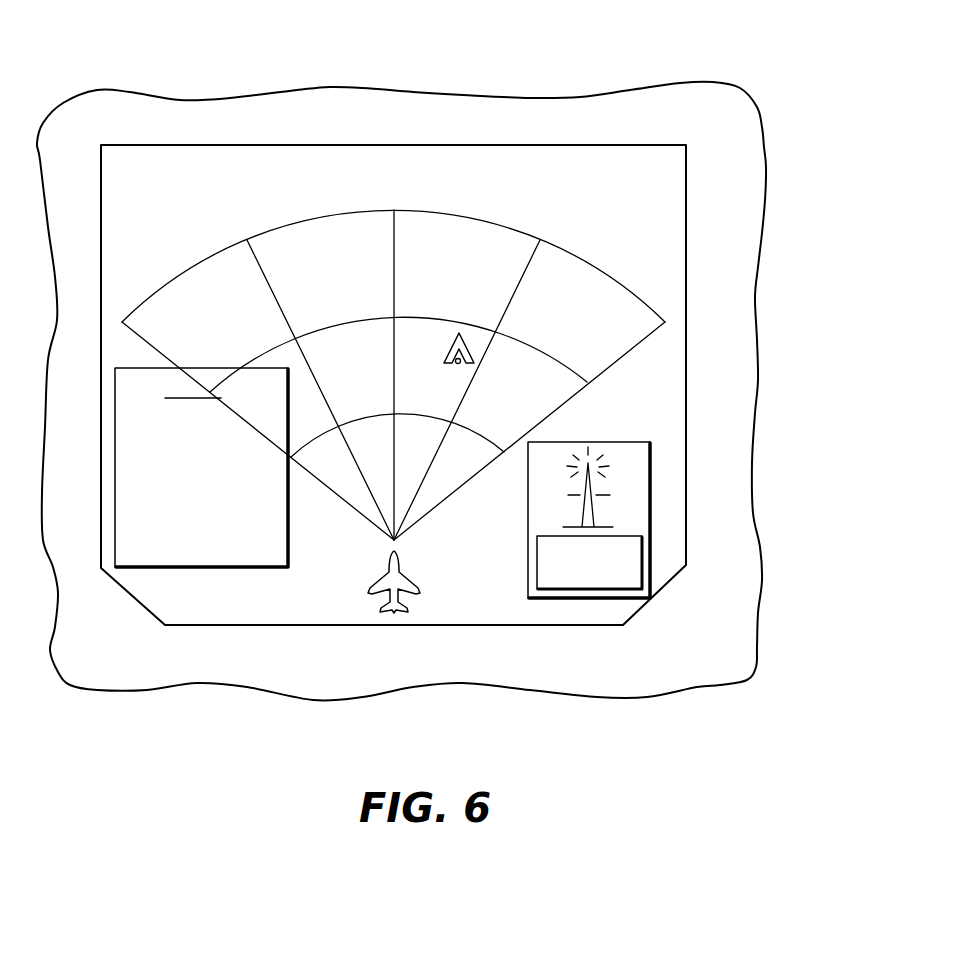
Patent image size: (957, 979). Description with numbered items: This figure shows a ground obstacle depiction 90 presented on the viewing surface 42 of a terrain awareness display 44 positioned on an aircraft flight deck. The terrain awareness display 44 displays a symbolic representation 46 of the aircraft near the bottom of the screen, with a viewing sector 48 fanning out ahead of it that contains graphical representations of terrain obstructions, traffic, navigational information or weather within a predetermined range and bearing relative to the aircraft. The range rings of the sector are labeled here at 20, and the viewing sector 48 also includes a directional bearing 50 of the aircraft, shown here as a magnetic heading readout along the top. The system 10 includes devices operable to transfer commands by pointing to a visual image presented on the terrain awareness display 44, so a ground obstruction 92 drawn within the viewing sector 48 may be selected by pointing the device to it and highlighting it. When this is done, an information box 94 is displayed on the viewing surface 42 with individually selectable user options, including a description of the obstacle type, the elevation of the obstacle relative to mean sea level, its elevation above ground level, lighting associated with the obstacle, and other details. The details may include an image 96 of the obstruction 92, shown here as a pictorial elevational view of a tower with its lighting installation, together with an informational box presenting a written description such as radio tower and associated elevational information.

The ground obstacle depiction 90 is at (757, 57).
The terrain awareness display 44 is at (763, 143).
The viewing surface 42 is at (631, 213).
The directional bearing 50 is at (316, 186).
The system 10 is at (331, 375).
The range rings 20 is at (393, 333).
The viewing sector 48 is at (578, 414).
The ground obstruction 92 is at (446, 355).
The symbolic representation of the aircraft 46 is at (406, 576).
The information box 94 is at (288, 536).
The image of the obstruction 96 is at (528, 568).